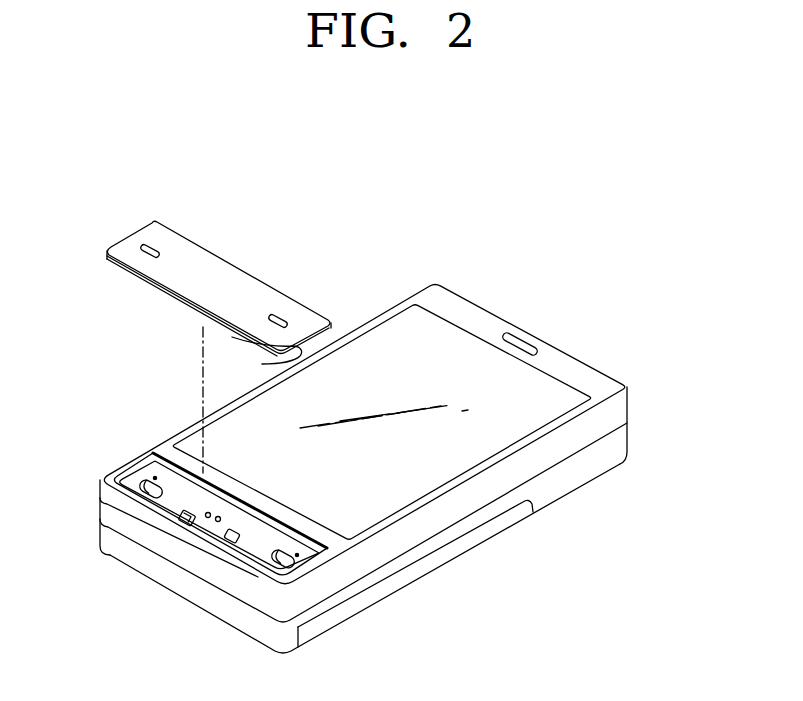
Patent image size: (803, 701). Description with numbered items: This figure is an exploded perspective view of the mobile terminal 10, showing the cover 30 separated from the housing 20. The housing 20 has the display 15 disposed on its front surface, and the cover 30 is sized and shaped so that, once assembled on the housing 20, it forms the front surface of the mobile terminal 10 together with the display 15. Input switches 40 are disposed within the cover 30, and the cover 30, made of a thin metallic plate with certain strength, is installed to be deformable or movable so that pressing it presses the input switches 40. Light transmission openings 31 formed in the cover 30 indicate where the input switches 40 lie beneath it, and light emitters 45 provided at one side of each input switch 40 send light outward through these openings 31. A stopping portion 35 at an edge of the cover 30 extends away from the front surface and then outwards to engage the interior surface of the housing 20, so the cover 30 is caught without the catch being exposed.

The mobile terminal 10 is at (577, 341).
The display 15 is at (405, 333).
The housing 20 is at (632, 414).
The cover 30 is at (167, 277).
The light transmission openings 31 is at (278, 318).
The stopping portion 35 is at (262, 364).
The input switches 40 is at (270, 562).
The light emitters 45 is at (153, 477).